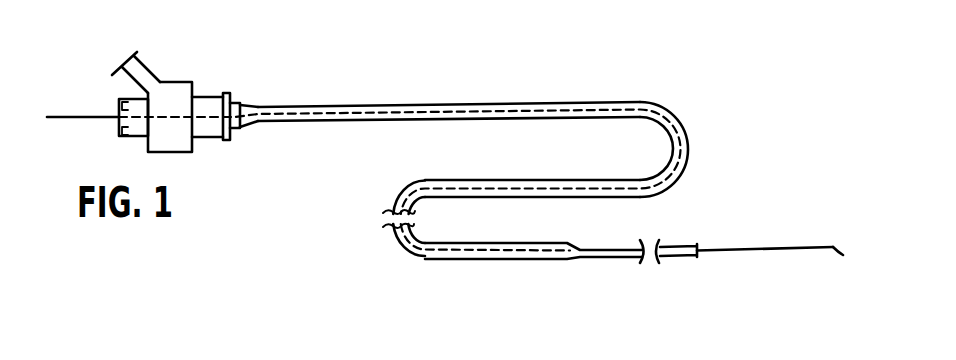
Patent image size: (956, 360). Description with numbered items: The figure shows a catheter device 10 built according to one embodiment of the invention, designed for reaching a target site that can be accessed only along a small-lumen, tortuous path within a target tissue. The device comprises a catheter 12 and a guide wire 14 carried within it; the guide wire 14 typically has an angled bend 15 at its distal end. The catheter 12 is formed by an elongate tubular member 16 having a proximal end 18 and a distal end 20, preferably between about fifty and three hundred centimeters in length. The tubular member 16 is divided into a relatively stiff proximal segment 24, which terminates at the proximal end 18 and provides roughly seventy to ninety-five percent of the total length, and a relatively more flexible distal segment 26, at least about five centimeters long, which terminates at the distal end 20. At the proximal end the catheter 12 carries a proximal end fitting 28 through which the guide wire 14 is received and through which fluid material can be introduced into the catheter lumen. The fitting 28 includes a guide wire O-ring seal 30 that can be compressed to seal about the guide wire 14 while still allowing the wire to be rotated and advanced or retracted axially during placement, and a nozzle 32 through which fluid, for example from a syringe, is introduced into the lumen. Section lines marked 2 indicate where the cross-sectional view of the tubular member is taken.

The section line (FIG. 2) 2 is at (356, 138).
The catheter device 10 is at (742, 190).
The catheter 12 is at (436, 99).
The guide wire 14 is at (760, 247).
The angled bend 15 is at (838, 247).
The elongate tubular member 16 is at (547, 99).
The proximal end 18 is at (232, 134).
The distal end 20 is at (698, 258).
The proximal segment 24 is at (694, 146).
The distal segment 26 is at (602, 241).
The proximal end fitting 28 is at (208, 98).
The guide wire O-ring seal 30 is at (120, 133).
The nozzle 32 is at (141, 67).